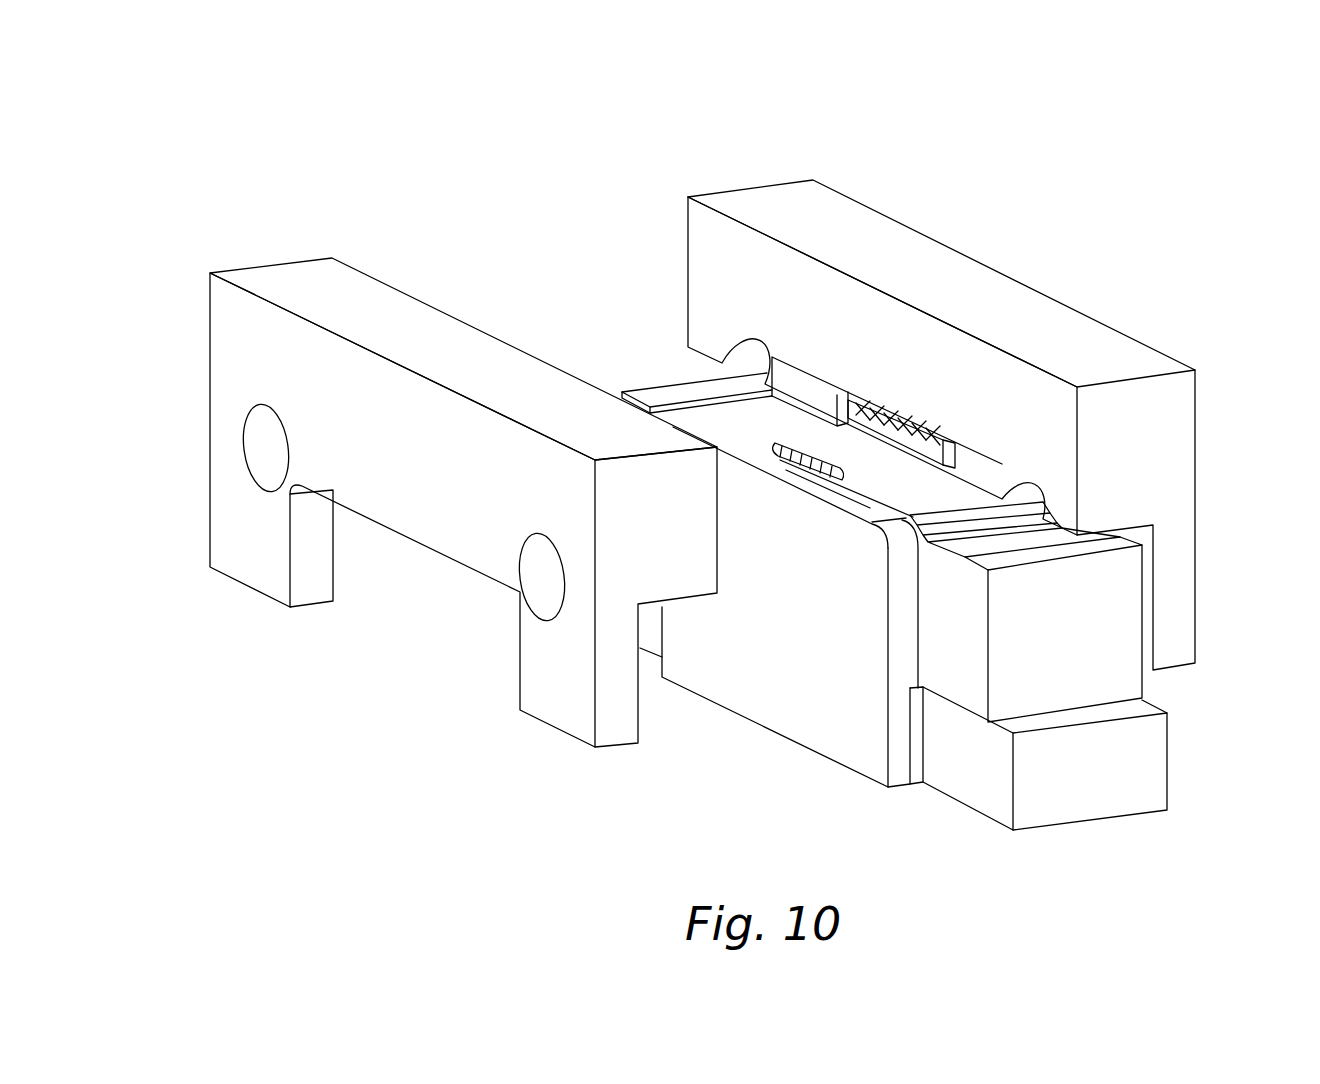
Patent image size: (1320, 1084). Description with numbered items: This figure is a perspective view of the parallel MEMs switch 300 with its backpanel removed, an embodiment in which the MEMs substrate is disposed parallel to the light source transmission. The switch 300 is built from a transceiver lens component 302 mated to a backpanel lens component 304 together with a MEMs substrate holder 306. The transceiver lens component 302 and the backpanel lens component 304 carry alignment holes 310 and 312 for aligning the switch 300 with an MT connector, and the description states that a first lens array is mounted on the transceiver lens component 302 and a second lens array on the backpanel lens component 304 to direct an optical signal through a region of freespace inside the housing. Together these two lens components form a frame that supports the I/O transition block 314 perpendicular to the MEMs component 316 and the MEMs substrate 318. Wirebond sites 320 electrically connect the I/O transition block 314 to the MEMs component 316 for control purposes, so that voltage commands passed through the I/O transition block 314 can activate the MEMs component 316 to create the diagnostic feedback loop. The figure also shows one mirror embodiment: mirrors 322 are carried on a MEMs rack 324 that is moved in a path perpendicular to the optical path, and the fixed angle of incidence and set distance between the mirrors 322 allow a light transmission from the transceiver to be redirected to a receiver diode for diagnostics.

The parallel MEMs switch 300 is at (403, 123).
The transceiver lens component 302 is at (977, 267).
The backpanel lens component 304 is at (279, 266).
The MEMs substrate holder 306 is at (1102, 812).
The alignment hole 310 is at (266, 450).
The alignment hole 312 is at (540, 577).
The I/O transition block 314 is at (770, 692).
The MEMs component 316 is at (883, 500).
The MEMs substrate 318 is at (1080, 658).
The wirebond sites 320 is at (773, 445).
The mirrors 322 is at (972, 460).
The MEMs rack 324 is at (856, 418).